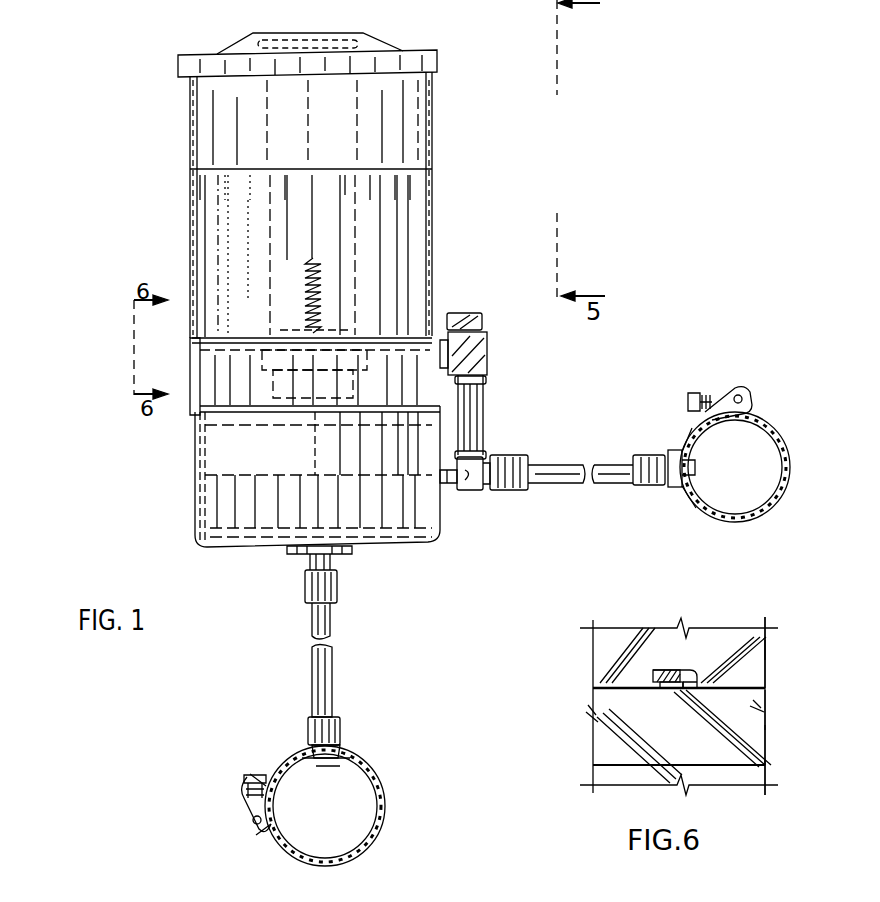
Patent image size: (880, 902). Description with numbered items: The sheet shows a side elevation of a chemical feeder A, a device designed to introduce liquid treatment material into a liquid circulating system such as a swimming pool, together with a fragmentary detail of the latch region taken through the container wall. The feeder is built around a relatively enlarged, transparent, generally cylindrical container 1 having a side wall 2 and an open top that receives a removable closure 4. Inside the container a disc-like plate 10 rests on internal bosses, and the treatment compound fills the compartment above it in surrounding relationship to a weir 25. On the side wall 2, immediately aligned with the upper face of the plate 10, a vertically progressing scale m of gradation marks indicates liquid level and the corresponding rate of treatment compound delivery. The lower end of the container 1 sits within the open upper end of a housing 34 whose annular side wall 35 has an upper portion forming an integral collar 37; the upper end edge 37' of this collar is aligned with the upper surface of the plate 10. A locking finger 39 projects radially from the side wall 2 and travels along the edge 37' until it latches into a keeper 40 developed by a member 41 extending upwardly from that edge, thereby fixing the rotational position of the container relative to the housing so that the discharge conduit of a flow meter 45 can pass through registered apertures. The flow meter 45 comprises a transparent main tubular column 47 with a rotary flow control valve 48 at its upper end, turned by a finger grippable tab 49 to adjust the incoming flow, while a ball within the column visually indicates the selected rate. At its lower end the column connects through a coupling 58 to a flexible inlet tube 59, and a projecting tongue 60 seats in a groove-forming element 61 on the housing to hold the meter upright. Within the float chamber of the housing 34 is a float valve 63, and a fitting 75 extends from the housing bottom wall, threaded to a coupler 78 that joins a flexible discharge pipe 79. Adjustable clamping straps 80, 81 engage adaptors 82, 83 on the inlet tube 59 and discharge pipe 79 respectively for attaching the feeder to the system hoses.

In FIG. 1, the chemical feeder A is at (173, 140).
In FIG. 1, the container 1 is at (190, 163).
In FIG. 6, the container 1 is at (765, 635).
In FIG. 1, the side wall 2 is at (192, 187).
In FIG. 6, the side wall 2 is at (765, 658).
In FIG. 1, the removable closure 4 is at (422, 45).
In FIG. 1, the scale m is at (305, 278).
In FIG. 1, the plate 10 is at (200, 357).
In FIG. 1, the weir 25 is at (355, 193).
In FIG. 1, the housing 34 is at (197, 530).
In FIG. 6, the housing 34 is at (765, 756).
In FIG. 6, the annular side wall 35 is at (765, 738).
In FIG. 6, the collar 37 is at (807, 709).
In FIG. 6, the upper end edge of collar 37' is at (776, 670).
In FIG. 6, the locking finger 39 is at (655, 688).
In FIG. 6, the keeper 40 is at (680, 690).
In FIG. 6, the member 41 is at (688, 682).
In FIG. 1, the flow meter 45 is at (483, 413).
In FIG. 1, the main tubular column 47 is at (483, 428).
In FIG. 1, the rotary flow control valve 48 is at (487, 360).
In FIG. 1, the finger grippable tab 49 is at (467, 313).
In FIG. 1, the coupling 58 is at (507, 493).
In FIG. 1, the inlet tube 59 is at (548, 485).
In FIG. 1, the projecting tongue 60 is at (448, 485).
In FIG. 1, the groove-forming element 61 is at (452, 487).
In FIG. 1, the float valve 63 is at (210, 502).
In FIG. 1, the fitting 75 is at (312, 558).
In FIG. 1, the coupler 78 is at (305, 585).
In FIG. 1, the discharge pipe 79 is at (312, 625).
In FIG. 1, the adjustable clamping strap 80 is at (300, 762).
In FIG. 1, the adjustable clamping strap 81 is at (760, 425).
In FIG. 1, the adaptor 82 is at (692, 465).
In FIG. 1, the adaptor 83 is at (347, 768).